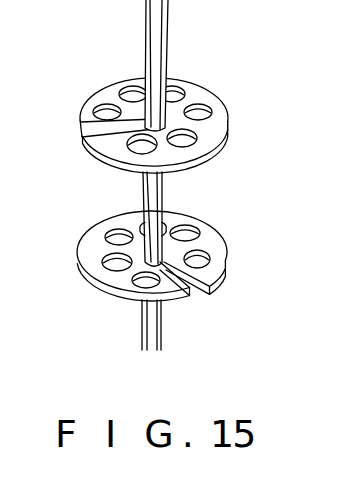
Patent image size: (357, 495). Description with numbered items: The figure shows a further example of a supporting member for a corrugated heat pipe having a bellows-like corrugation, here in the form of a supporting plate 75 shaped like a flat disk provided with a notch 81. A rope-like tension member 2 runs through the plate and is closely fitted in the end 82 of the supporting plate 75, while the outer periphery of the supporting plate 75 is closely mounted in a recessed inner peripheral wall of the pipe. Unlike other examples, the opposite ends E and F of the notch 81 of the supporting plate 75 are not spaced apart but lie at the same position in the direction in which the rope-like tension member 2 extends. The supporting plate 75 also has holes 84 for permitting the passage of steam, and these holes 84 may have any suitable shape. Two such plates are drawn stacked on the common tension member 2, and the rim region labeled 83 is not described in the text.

The rope-like tension member 2 is at (163, 16).
The supporting plate 75 is at (145, 107).
The notch 81 is at (88, 137).
The end 82 is at (224, 140).
The disc rim 83 is at (228, 123).
The holes 84 is at (205, 103).
The end of notch E is at (215, 267).
The end of notch F is at (177, 286).